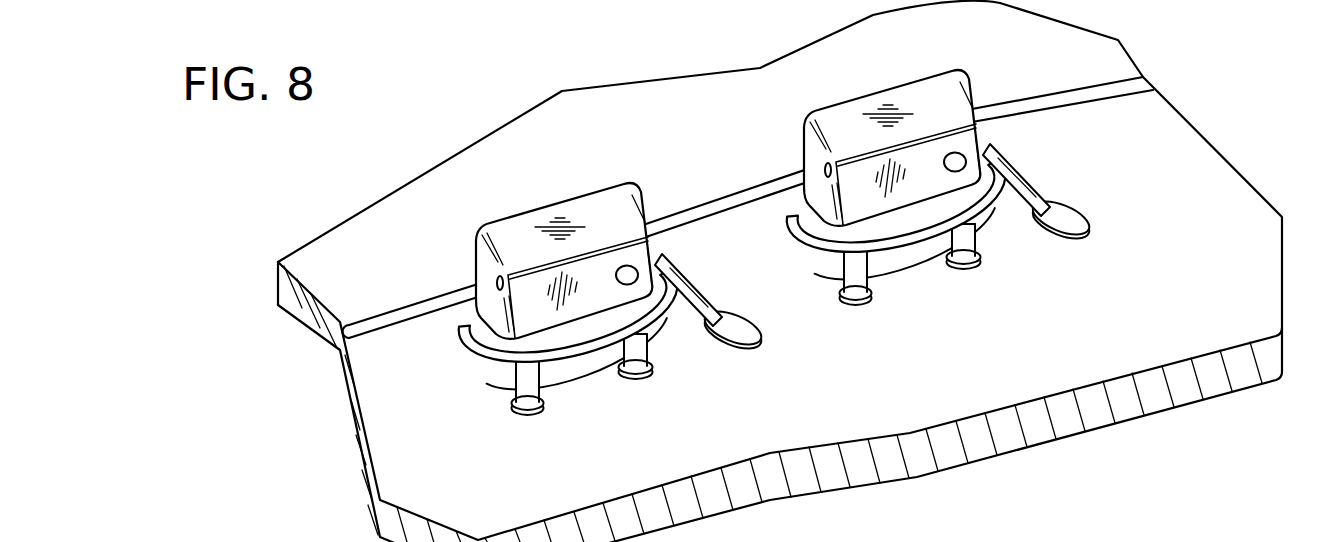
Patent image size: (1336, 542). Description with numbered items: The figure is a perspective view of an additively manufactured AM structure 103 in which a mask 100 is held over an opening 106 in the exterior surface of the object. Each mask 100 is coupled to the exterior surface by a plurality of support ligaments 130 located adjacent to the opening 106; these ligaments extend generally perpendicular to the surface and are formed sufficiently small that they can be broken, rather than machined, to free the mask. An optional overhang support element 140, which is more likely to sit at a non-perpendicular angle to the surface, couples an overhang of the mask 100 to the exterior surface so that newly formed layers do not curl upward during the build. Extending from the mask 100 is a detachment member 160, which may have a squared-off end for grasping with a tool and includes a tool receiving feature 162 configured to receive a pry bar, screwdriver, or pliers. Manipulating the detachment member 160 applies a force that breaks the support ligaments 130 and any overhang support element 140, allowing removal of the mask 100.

The mask 100 is at (643, 313).
The AM structure 103 is at (1060, 247).
The opening 106 is at (560, 363).
The support ligaments 130 is at (523, 395).
The overhang support element 140 is at (697, 303).
The detachment member 160 is at (590, 207).
The tool receiving feature 162 is at (957, 158).